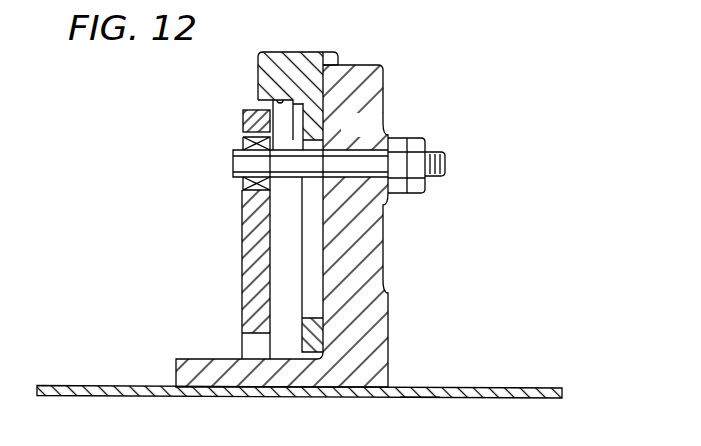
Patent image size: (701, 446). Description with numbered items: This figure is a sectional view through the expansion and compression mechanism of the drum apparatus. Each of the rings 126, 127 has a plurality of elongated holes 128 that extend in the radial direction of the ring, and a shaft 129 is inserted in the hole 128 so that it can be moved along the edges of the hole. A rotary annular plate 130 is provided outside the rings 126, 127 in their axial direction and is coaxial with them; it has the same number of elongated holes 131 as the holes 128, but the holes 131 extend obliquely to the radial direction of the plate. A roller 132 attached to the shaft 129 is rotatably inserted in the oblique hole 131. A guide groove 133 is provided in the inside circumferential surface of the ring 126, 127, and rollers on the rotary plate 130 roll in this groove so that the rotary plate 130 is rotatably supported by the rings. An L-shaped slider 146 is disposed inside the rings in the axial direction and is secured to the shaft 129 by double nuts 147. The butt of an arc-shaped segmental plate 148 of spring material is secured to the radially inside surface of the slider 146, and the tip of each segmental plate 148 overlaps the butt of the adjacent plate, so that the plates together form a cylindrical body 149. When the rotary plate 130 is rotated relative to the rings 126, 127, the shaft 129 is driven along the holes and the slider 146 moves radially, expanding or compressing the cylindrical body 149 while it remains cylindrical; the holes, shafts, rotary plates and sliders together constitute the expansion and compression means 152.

The ring 126 is at (312, 52).
The ring 127 is at (371, 40).
The elongated hole 128 is at (355, 182).
The shaft 129 is at (233, 163).
The rotary annular plate 130 is at (245, 242).
The elongated hole 131 is at (248, 184).
The roller 132 is at (243, 140).
The guide groove 133 is at (285, 98).
The L-shaped slider 146 is at (372, 276).
The double nuts 147 is at (403, 138).
The arc-shaped segmental plate 148 is at (495, 388).
The cylindrical body 149 is at (418, 402).
The expansion and compression means 152 is at (445, 140).